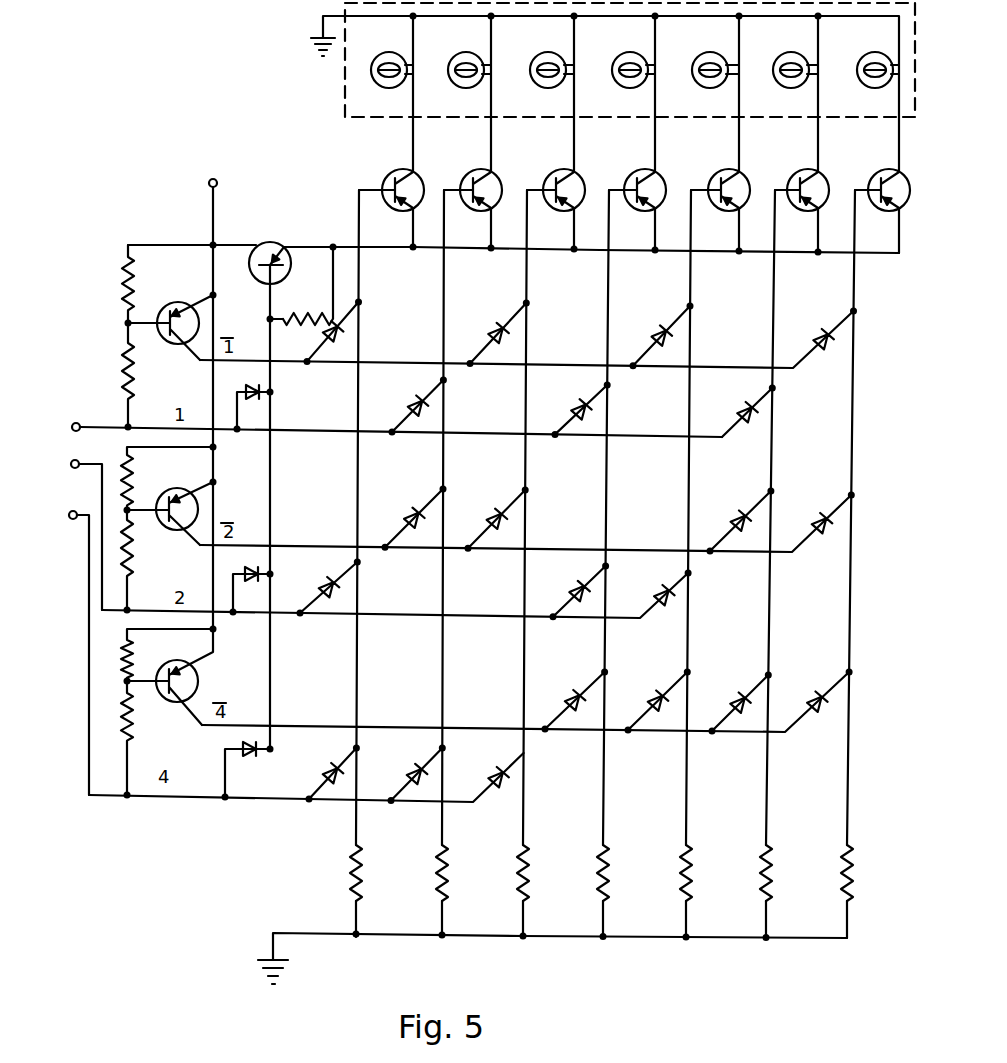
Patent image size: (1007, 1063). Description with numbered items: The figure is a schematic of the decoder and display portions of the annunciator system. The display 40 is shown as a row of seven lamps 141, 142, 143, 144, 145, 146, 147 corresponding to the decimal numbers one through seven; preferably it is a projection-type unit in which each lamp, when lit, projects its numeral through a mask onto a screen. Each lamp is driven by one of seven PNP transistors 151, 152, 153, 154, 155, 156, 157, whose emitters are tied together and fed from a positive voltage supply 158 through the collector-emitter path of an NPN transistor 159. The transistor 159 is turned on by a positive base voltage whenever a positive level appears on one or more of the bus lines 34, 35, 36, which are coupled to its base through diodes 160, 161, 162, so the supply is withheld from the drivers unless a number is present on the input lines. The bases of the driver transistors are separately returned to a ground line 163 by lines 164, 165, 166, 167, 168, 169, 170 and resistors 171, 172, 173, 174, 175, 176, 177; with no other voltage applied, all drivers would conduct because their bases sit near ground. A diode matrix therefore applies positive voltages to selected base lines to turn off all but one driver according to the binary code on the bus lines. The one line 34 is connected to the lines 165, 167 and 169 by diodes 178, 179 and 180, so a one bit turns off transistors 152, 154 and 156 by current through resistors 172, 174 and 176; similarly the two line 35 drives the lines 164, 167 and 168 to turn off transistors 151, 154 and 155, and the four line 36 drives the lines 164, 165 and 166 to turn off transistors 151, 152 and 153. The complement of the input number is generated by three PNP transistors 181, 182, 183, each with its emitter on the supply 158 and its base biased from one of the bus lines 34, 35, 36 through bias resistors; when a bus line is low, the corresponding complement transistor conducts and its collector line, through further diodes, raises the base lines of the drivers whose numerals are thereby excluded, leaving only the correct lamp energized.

The bus line 34 is at (80, 424).
The bus line 35 is at (106, 449).
The bus line 36 is at (88, 495).
The display 40 is at (344, 113).
The lamp 141 is at (403, 50).
The lamp 142 is at (480, 50).
The lamp 143 is at (562, 50).
The lamp 144 is at (644, 50).
The lamp 145 is at (724, 52).
The lamp 146 is at (805, 52).
The lamp 147 is at (887, 54).
The PNP transistor 151 is at (392, 176).
The PNP transistor 152 is at (472, 174).
The PNP transistor 153 is at (558, 178).
The PNP transistor 154 is at (640, 174).
The PNP transistor 155 is at (722, 176).
The PNP transistor 156 is at (809, 176).
The PNP transistor 157 is at (882, 178).
The positive voltage supply 158 is at (220, 187).
The NPN transistor 159 is at (271, 245).
The diode 160 is at (270, 387).
The diode 161 is at (258, 573).
The diode 162 is at (265, 750).
The ground line 163 is at (298, 933).
The line 164 is at (355, 472).
The line 165 is at (440, 472).
The line 166 is at (522, 474).
The line 167 is at (605, 474).
The line 168 is at (688, 472).
The line 169 is at (771, 473).
The line 170 is at (850, 472).
The resistor 171 is at (341, 883).
The resistor 172 is at (429, 885).
The resistor 173 is at (511, 885).
The resistor 174 is at (591, 885).
The resistor 175 is at (677, 885).
The resistor 176 is at (759, 885).
The resistor 177 is at (841, 885).
The diode 178 is at (402, 403).
The diode 179 is at (572, 407).
The diode 180 is at (731, 411).
The PNP transistor 181 is at (193, 303).
The PNP transistor 182 is at (194, 486).
The PNP transistor 183 is at (184, 661).